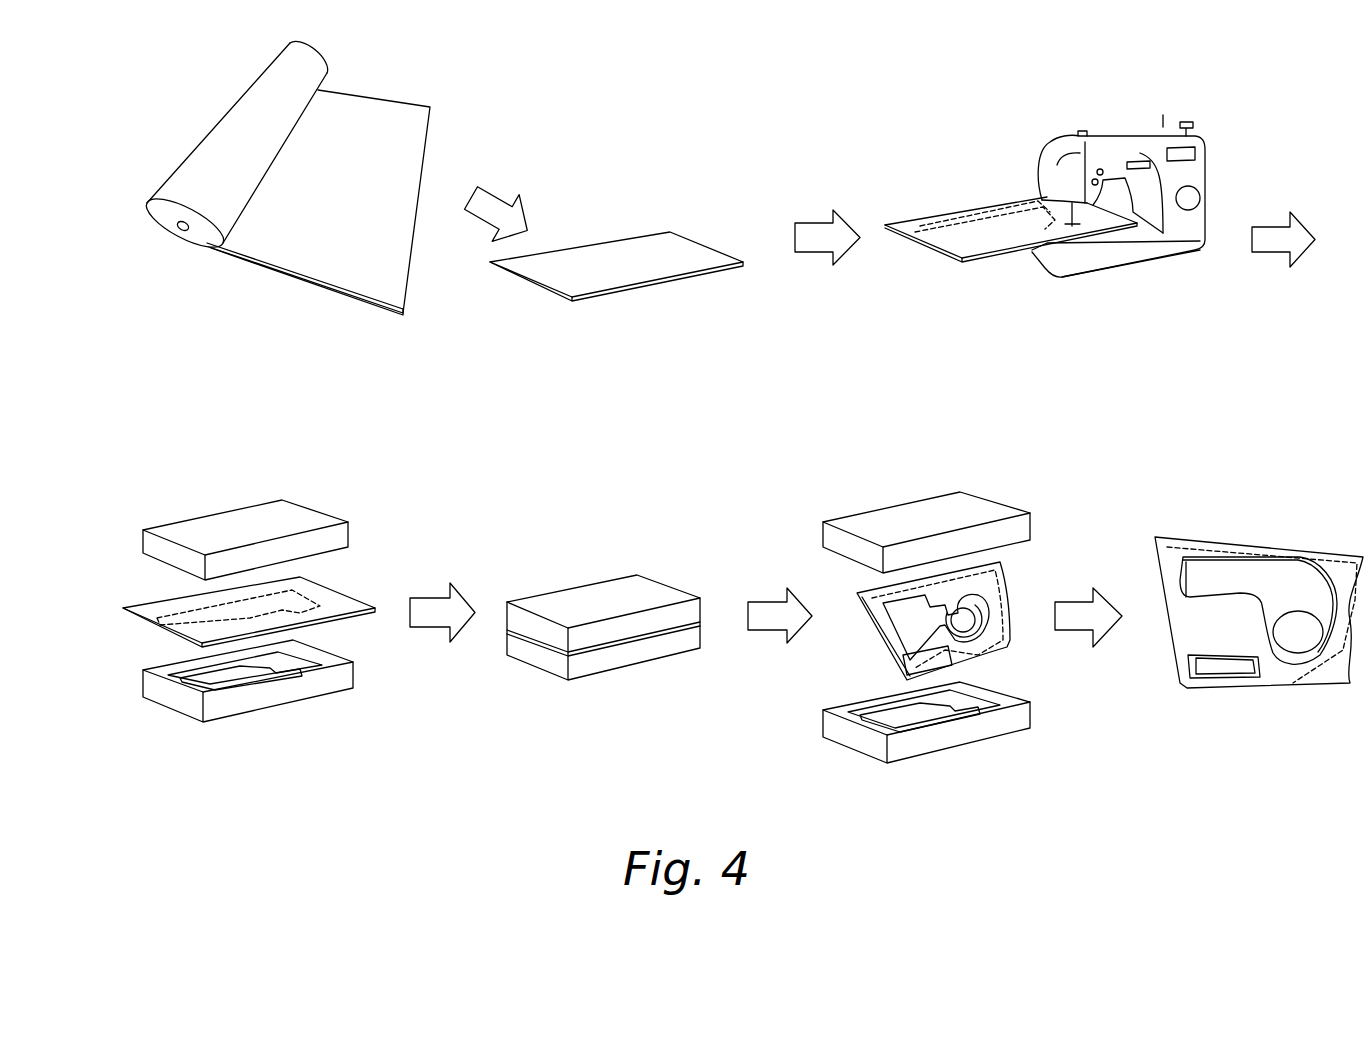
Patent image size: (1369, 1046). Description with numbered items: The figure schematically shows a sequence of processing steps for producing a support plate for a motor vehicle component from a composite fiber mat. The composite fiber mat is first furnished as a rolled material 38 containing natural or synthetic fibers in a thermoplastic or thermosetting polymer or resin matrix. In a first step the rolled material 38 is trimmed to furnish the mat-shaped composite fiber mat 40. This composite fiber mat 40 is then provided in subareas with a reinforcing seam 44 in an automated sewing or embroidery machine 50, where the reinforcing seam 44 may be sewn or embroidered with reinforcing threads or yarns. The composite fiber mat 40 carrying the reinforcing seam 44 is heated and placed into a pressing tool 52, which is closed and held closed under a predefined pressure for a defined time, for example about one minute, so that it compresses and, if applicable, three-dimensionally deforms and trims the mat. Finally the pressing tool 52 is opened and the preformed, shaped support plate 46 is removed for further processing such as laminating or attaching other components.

The rolled material 38 is at (370, 117).
The composite fiber mat 40 is at (678, 247).
The reinforcing seam 44 is at (1003, 222).
The automated sewing or embroidery machine 50 is at (1183, 177).
The pressing tool 52 is at (257, 695).
The support plate 46 is at (1278, 673).